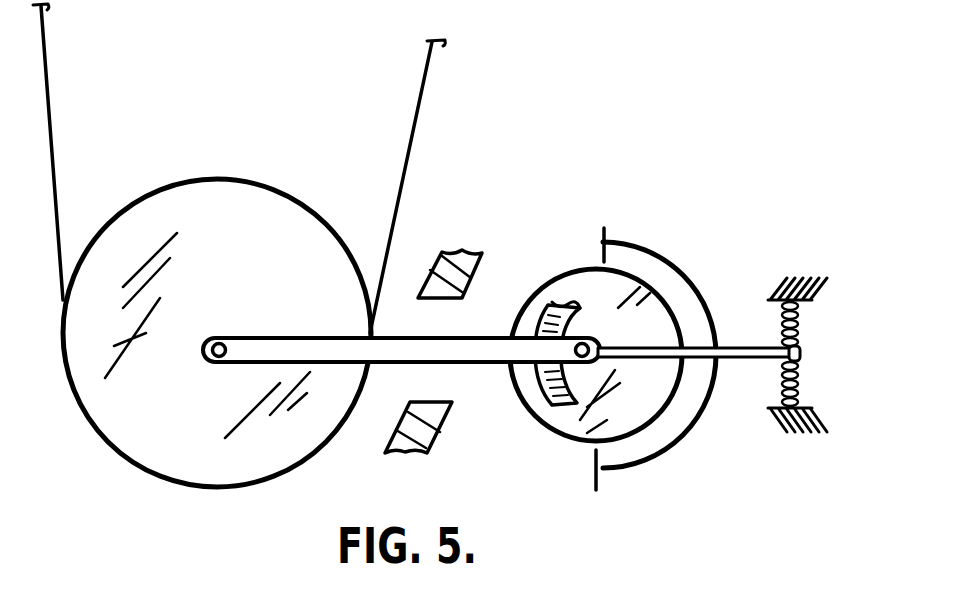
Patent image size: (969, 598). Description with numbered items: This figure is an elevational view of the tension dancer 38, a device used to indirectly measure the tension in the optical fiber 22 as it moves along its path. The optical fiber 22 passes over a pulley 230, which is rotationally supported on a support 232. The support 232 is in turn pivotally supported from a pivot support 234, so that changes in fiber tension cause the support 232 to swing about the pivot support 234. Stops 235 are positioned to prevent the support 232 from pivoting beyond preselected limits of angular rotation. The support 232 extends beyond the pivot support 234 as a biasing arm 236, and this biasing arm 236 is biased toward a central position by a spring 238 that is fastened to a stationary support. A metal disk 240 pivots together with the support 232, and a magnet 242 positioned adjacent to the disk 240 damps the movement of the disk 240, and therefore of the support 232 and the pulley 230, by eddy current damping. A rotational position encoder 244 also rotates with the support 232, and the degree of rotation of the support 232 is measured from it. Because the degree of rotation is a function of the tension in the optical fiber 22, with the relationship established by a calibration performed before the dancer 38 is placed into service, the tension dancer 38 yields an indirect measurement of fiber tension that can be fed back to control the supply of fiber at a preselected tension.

The optical fiber 22 is at (46, 58).
The tension dancer 38 is at (500, 81).
The pulley 230 is at (152, 440).
The support 232 is at (293, 337).
The pivot support 234 is at (605, 327).
The stops 235 is at (392, 440).
The biasing arm 236 is at (745, 343).
The spring 238 is at (788, 322).
The metal disk 240 is at (560, 433).
The magnet 242 is at (683, 433).
The rotational position encoder 244 is at (542, 387).